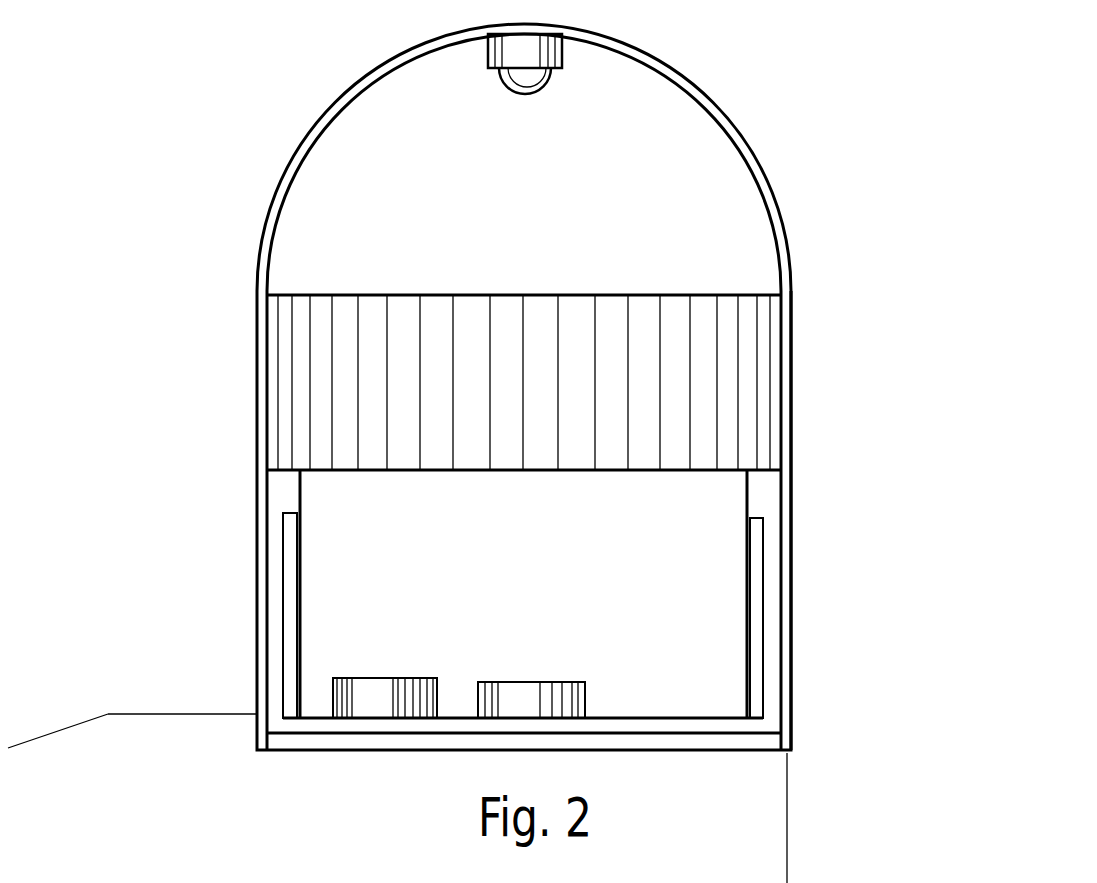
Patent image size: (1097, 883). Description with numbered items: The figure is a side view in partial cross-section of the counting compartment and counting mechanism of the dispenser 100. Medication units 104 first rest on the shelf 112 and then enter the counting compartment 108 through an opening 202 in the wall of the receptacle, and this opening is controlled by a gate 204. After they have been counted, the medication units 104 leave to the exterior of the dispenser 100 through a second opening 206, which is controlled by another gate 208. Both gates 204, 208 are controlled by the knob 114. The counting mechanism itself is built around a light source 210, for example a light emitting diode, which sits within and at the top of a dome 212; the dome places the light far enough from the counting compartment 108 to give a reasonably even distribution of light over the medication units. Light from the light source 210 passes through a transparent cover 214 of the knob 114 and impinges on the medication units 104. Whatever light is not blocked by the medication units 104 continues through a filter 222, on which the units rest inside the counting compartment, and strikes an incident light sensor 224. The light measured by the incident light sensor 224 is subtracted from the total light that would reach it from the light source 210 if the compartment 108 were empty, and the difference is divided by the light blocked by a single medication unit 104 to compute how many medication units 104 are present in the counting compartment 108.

The dispenser 100 is at (797, 720).
The medication units 104 is at (367, 679).
The counting compartment 108 is at (790, 515).
The shelf 112 is at (147, 714).
The knob 114 is at (792, 318).
The opening 202 is at (257, 548).
The gate 204 is at (292, 583).
The opening 206 is at (790, 653).
The gate 208 is at (755, 684).
The light source 210 is at (548, 80).
The dome 212 is at (723, 113).
The transparent cover 214 is at (437, 294).
The filter 222 is at (602, 725).
The incident light sensor 224 is at (445, 738).